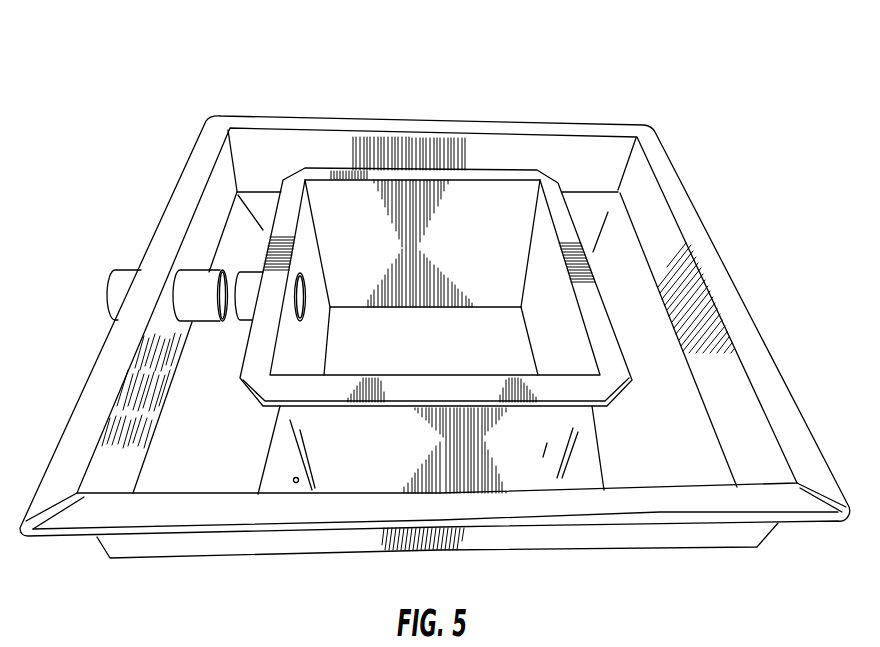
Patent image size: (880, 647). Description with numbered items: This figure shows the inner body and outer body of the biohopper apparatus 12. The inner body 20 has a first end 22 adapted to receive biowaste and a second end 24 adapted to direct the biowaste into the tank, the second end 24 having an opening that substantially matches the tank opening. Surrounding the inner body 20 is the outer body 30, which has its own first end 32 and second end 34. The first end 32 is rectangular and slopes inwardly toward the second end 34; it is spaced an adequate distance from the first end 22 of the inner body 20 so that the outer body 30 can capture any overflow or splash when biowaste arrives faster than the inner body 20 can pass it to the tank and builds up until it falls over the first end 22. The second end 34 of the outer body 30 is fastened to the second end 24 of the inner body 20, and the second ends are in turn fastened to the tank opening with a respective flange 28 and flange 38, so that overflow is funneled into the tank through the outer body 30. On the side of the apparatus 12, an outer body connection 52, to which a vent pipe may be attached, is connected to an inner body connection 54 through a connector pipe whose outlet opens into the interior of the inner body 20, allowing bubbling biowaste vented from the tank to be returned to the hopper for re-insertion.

The biohopper apparatus 12 is at (193, 78).
The inner body 20 is at (413, 200).
The first end of inner body 22 is at (370, 173).
The second end of inner body 24 is at (363, 307).
The flange 28 is at (278, 472).
The outer body 30 is at (640, 168).
The first end of outer body 32 is at (643, 203).
The second end of outer body 34 is at (573, 483).
The flange 38 is at (298, 480).
The outer body connection 52 is at (123, 280).
The inner body connection 54 is at (253, 272).